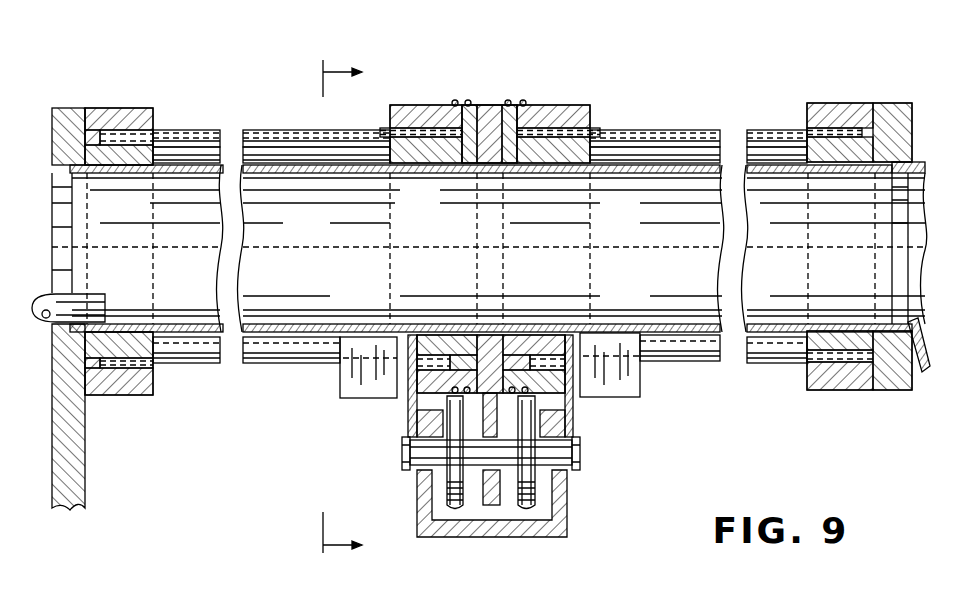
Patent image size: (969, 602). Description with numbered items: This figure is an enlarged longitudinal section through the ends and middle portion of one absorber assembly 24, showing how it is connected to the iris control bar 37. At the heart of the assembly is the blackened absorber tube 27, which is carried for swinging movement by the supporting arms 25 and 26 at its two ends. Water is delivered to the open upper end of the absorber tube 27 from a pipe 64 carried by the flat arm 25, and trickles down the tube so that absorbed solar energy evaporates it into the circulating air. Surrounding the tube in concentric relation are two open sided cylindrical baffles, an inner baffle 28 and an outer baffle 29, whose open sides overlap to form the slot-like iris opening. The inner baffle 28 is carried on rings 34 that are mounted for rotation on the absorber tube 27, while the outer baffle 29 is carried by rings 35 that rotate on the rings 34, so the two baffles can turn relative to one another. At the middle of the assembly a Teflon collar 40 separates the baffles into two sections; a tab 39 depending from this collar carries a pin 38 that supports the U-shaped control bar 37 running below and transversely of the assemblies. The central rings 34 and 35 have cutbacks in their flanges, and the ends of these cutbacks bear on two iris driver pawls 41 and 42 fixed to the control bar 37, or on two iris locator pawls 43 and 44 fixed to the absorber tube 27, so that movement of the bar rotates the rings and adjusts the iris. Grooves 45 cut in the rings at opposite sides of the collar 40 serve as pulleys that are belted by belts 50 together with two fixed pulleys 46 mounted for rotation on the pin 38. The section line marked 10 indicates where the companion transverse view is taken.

The section line 10 is at (326, 309).
The absorber assembly 24 is at (702, 109).
The supporting arm 25 is at (82, 440).
The supporting arm 26 is at (925, 364).
The absorber tube 27 is at (320, 170).
The inner baffle 28 is at (642, 143).
The outer baffle 29 is at (672, 128).
The ring 34 is at (130, 160).
The ring 35 is at (128, 107).
The control bar 37 is at (567, 507).
The pin 38 is at (428, 448).
The tab 39 is at (483, 504).
The collar 40 is at (490, 103).
The iris driver pawl 41 is at (410, 335).
The iris driver pawl 42 is at (573, 408).
The iris locator pawl 43 is at (348, 372).
The iris locator pawl 44 is at (630, 375).
The groove 45 is at (524, 388).
The fixed pulley 46 is at (447, 489).
The belt 50 is at (467, 100).
The pipe 64 is at (98, 297).